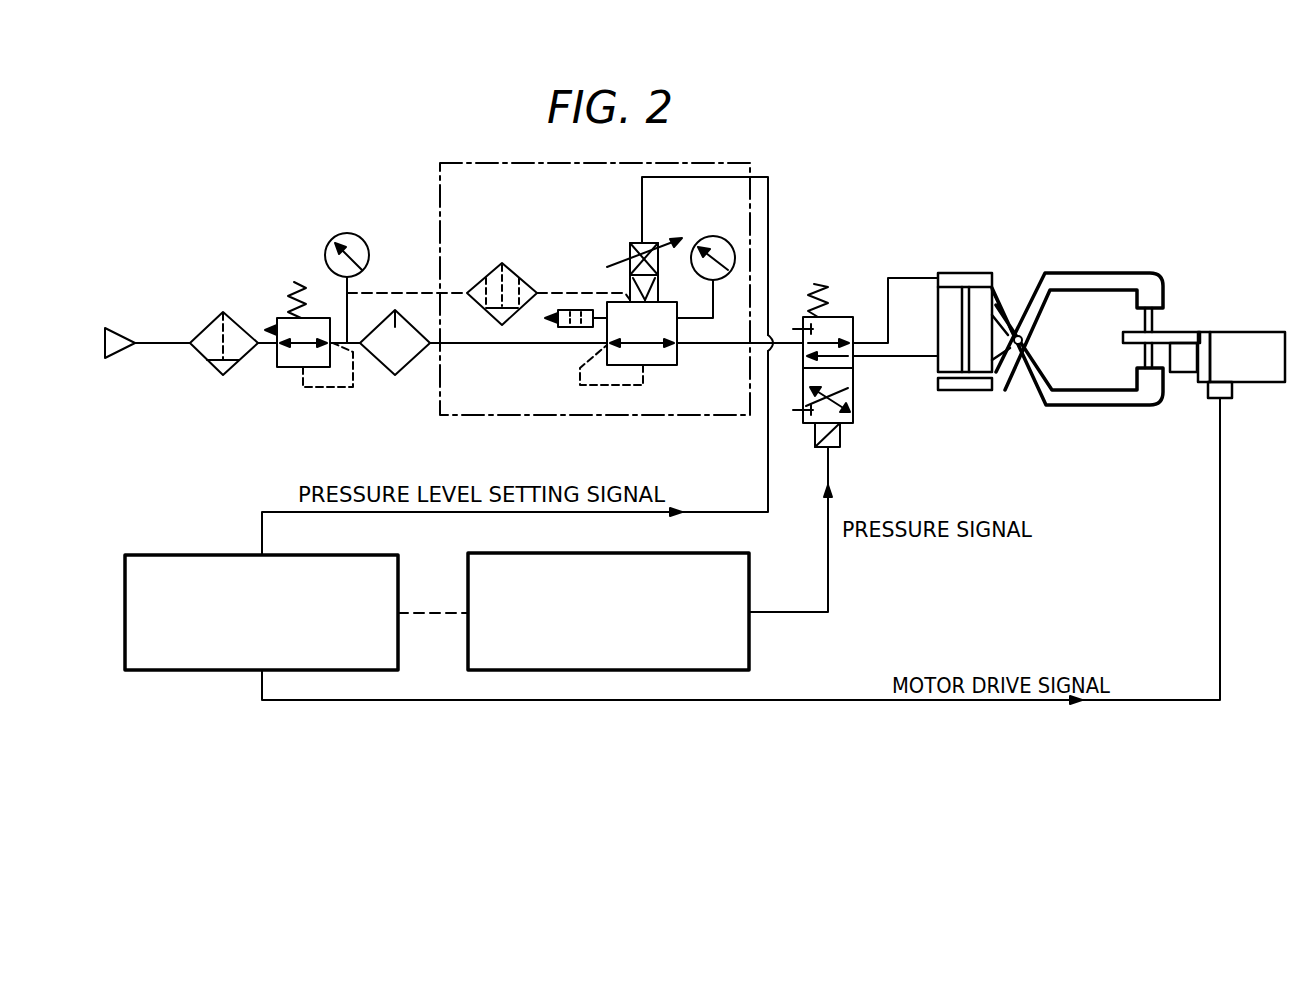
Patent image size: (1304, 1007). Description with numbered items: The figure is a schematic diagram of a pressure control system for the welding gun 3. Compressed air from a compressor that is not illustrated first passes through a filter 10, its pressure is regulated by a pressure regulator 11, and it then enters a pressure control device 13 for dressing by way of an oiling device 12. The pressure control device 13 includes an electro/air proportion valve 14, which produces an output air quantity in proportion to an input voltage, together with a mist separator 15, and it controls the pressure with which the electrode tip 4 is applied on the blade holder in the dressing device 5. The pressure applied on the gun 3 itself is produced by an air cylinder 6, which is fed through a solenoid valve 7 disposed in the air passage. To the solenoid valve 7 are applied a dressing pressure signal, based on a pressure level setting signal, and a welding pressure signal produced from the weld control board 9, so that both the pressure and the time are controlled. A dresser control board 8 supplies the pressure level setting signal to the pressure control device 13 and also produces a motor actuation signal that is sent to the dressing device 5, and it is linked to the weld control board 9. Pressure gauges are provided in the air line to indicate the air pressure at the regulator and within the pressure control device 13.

The welding gun 3 is at (1100, 273).
The electrode tip 4 is at (1156, 326).
The dressing device 5 is at (1242, 332).
The air cylinder 6 is at (960, 272).
The solenoid valve 7 is at (828, 292).
The dresser control board 8 is at (335, 555).
The weld control board 9 is at (680, 553).
The filter 10 is at (204, 322).
The pressure regulator 11 is at (295, 282).
The oiling device 12 is at (395, 377).
The pressure control device 13 is at (650, 163).
The electro/air proportion valve 14 is at (680, 356).
The mist separator 15 is at (512, 276).